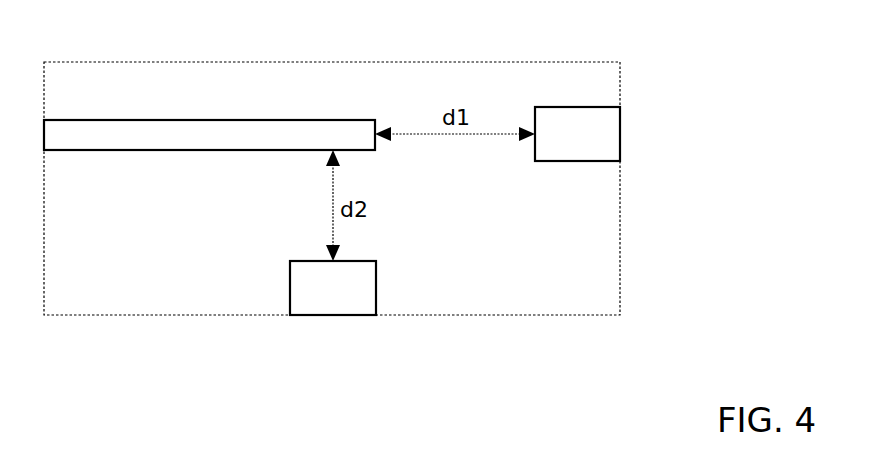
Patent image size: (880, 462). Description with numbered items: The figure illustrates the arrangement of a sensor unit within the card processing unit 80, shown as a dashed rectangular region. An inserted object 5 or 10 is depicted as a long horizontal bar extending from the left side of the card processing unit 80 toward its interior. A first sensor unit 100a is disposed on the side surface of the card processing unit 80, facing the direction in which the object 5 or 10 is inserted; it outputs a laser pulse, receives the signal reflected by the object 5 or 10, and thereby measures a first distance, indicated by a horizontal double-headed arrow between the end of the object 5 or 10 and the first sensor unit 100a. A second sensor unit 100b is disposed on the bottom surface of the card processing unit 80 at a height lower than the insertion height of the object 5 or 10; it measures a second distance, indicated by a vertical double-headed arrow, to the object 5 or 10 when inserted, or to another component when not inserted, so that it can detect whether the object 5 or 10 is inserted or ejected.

The object 5 is at (209, 86).
The object 10 is at (149, 128).
The card processing unit 80 is at (620, 243).
The first sensor unit 100a is at (610, 138).
The second sensor unit 100b is at (333, 305).